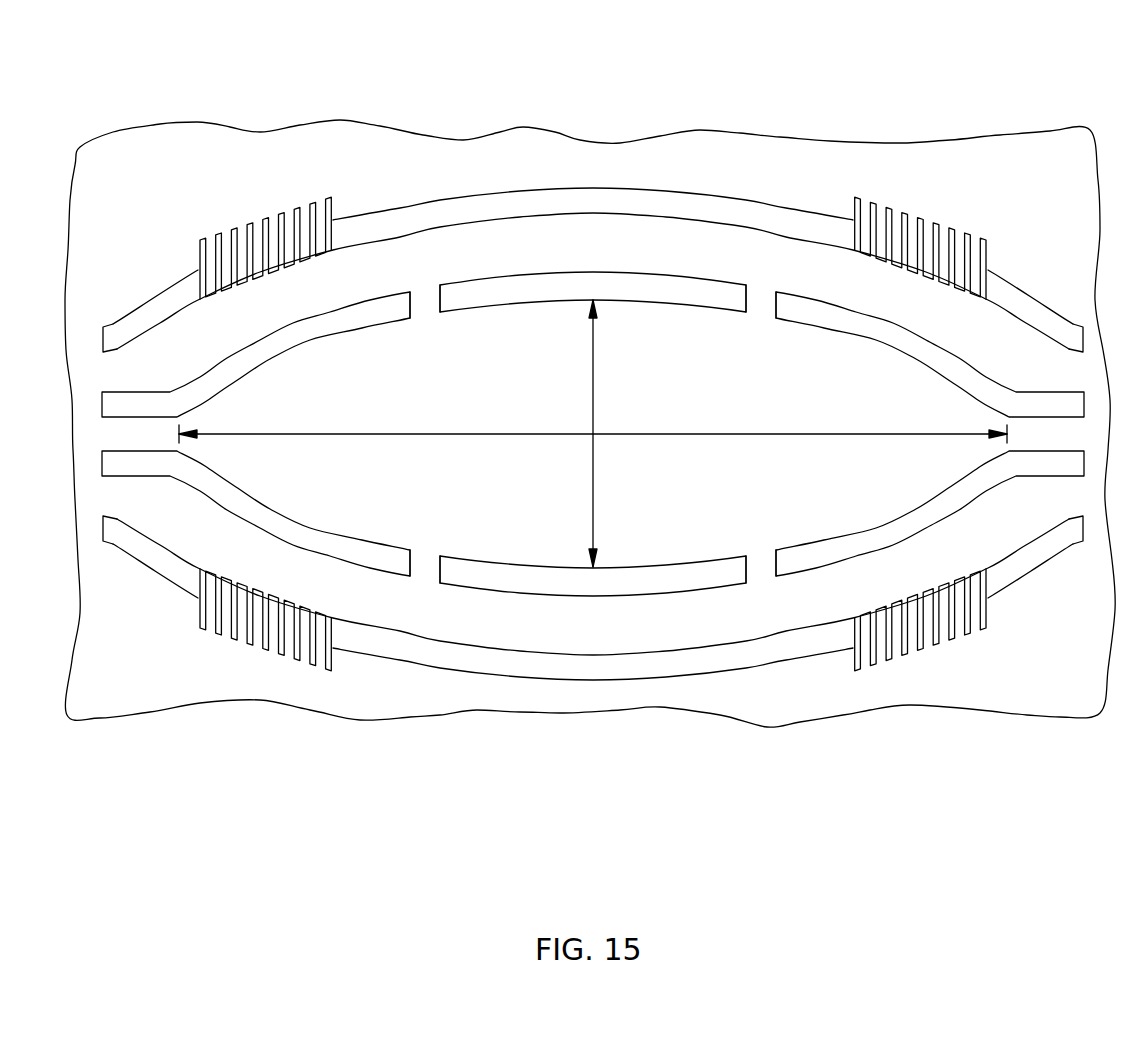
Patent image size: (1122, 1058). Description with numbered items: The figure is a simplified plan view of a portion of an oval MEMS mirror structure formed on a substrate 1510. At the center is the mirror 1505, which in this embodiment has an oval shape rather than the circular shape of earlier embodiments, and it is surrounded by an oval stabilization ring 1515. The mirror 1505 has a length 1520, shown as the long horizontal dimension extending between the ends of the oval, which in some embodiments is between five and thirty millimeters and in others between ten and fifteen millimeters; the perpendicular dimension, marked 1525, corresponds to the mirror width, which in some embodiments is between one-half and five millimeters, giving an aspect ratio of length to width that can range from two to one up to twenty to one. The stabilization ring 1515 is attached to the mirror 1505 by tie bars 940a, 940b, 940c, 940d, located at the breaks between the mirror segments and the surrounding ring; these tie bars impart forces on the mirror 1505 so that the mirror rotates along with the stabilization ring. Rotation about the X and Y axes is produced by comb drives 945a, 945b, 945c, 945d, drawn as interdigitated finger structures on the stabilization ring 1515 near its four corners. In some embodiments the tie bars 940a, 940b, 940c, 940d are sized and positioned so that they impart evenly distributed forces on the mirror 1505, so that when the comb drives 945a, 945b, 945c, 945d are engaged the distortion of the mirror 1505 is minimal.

The mirror 1505 is at (683, 488).
The substrate 1510 is at (1047, 205).
The stabilization ring 1515 is at (600, 628).
The length 1520 is at (465, 433).
The width dimension 1525 is at (593, 377).
The tie bar 940a is at (427, 298).
The tie bar 940b is at (759, 298).
The tie bar 940c is at (425, 573).
The tie bar 940d is at (762, 570).
The comb drive 945a is at (242, 220).
The comb drive 945b is at (915, 212).
The comb drive 945c is at (242, 647).
The comb drive 945d is at (958, 643).